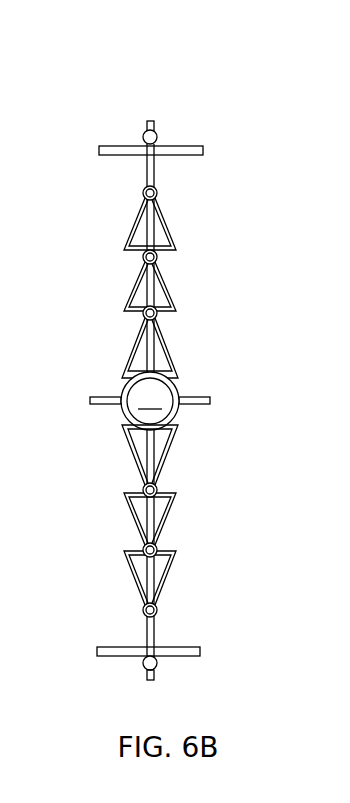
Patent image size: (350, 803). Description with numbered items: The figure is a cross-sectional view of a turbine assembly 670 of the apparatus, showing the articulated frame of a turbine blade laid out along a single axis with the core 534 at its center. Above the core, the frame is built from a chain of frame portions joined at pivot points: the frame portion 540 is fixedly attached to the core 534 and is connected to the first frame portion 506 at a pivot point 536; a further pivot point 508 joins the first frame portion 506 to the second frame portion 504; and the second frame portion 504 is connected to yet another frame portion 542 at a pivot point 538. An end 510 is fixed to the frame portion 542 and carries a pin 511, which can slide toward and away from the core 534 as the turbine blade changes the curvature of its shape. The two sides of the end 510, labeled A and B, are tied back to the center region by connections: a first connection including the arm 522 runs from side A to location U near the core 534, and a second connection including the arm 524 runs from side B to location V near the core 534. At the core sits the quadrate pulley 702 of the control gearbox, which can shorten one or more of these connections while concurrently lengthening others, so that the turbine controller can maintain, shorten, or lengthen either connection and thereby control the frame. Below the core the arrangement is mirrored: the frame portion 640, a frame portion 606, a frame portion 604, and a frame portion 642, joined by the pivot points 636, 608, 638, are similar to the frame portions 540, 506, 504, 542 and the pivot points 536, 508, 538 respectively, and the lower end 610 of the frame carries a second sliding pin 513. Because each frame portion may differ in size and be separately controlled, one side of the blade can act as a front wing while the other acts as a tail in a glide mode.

The antenna assembly 670 is at (274, 81).
The pin 511 is at (159, 132).
The end 510 is at (186, 144).
The frame portion 542 is at (156, 170).
The pivot point 538 is at (158, 195).
The second frame portion 504 is at (173, 238).
The first frame portion 506 is at (166, 279).
The frame portion 540 is at (168, 336).
The pivot point 508 is at (141, 257).
The pivot point 536 is at (141, 313).
The arm 524 is at (102, 392).
The arm 522 is at (194, 394).
The quadrate pulley 702 is at (150, 401).
The core 534 is at (179, 414).
The frame portion 640 is at (171, 458).
The pivot point 636 is at (142, 487).
The pivot point 608 is at (141, 547).
The pivot point 638 is at (141, 609).
The frame portion 606 is at (173, 519).
The frame portion 604 is at (174, 569).
The frame portion 642 is at (154, 635).
The lower crossbar 610 is at (125, 658).
The pin 513 is at (161, 669).